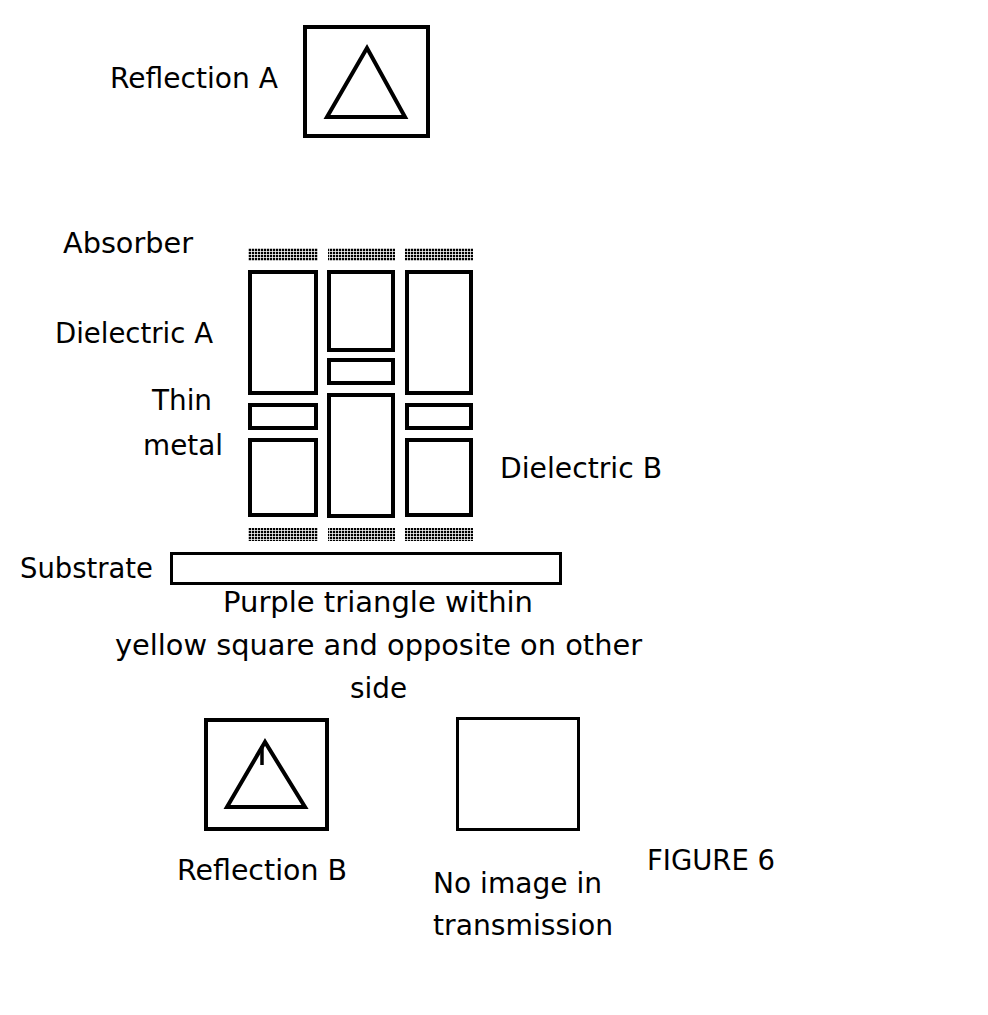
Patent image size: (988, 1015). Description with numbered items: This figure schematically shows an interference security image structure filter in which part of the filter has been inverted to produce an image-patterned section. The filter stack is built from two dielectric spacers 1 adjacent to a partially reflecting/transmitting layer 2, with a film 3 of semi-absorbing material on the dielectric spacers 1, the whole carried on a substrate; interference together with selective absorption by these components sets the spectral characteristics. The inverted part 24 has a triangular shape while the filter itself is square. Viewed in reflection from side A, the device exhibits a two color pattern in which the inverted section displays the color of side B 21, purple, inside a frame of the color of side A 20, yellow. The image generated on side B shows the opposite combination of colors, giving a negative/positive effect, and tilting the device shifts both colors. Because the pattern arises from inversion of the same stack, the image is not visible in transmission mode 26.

The color of side A 20 is at (390, 50).
The color of side B 21 is at (367, 97).
The inverted part 24 is at (355, 240).
The film of semi-absorbing material 3 is at (483, 250).
The dielectric spacer 1 is at (475, 333).
The partially reflecting/transmitting layer 2 is at (485, 415).
The transmission mode 26 is at (568, 806).